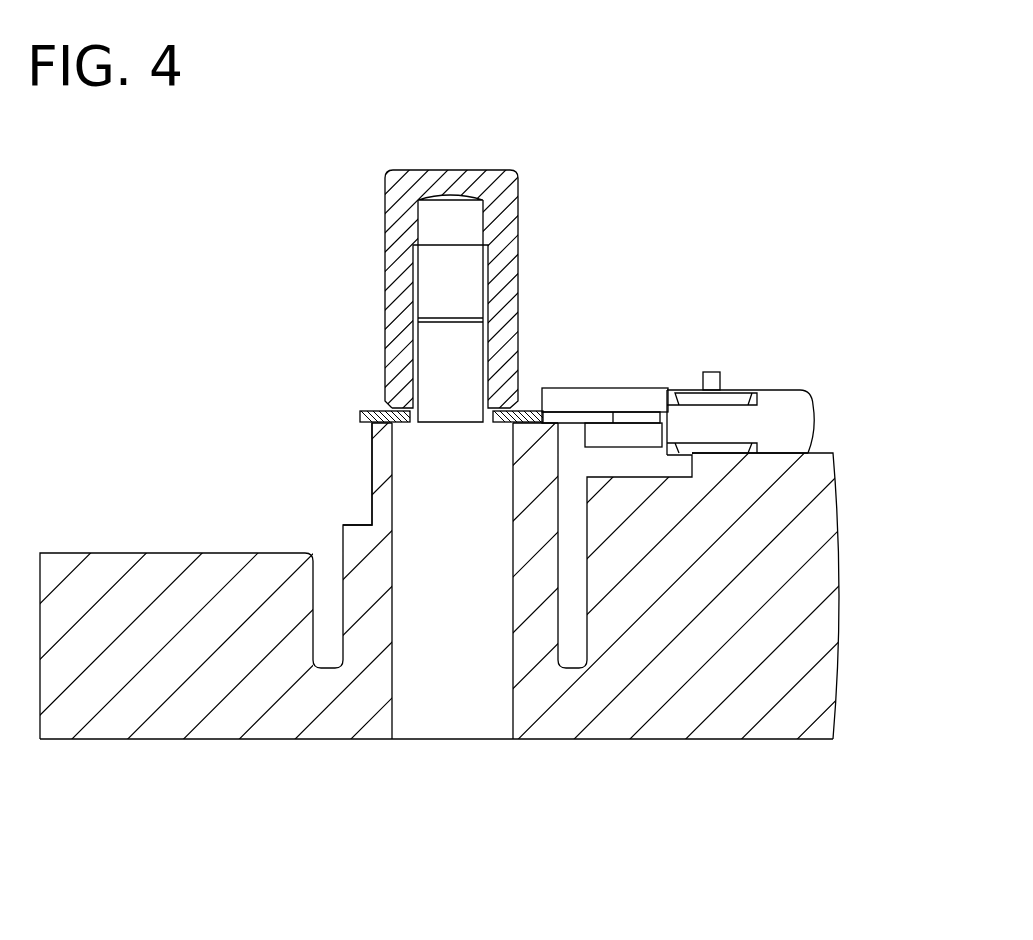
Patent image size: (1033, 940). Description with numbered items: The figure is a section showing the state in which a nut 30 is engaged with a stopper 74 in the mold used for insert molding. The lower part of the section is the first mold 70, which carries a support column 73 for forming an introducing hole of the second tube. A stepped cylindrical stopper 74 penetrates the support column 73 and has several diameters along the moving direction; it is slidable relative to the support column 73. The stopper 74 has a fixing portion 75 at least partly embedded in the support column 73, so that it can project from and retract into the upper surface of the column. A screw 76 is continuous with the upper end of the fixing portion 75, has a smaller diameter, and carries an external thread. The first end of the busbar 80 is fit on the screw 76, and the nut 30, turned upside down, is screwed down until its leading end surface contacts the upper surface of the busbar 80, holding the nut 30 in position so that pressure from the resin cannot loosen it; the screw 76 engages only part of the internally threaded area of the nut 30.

The nut 30 is at (556, 225).
The first mold 70 is at (884, 660).
The support column 73 is at (375, 497).
The stopper 74 is at (445, 797).
The fixing portion 75 is at (395, 447).
The screw 76 is at (428, 340).
The busbar 80 is at (362, 418).